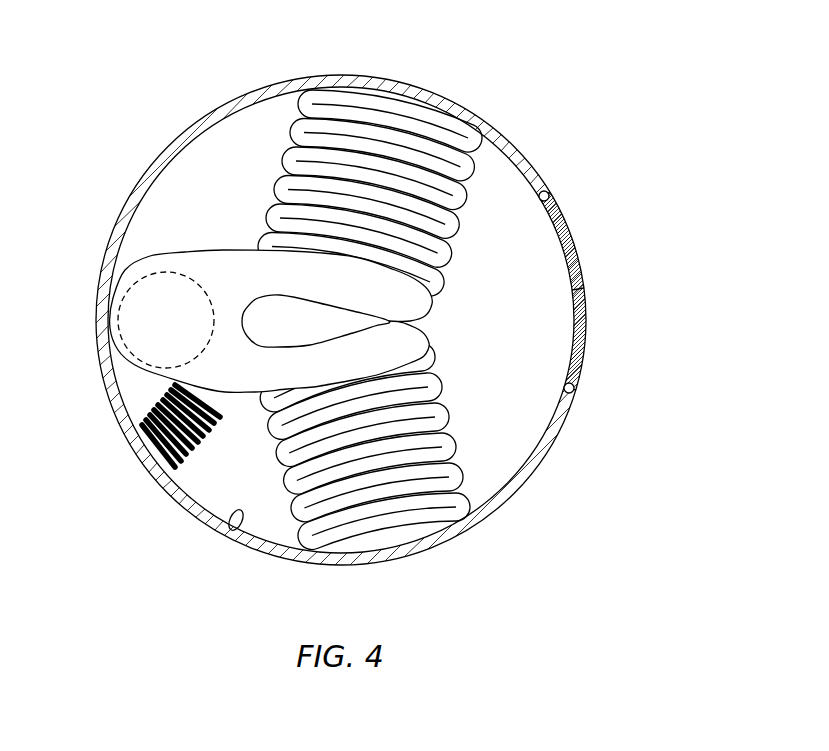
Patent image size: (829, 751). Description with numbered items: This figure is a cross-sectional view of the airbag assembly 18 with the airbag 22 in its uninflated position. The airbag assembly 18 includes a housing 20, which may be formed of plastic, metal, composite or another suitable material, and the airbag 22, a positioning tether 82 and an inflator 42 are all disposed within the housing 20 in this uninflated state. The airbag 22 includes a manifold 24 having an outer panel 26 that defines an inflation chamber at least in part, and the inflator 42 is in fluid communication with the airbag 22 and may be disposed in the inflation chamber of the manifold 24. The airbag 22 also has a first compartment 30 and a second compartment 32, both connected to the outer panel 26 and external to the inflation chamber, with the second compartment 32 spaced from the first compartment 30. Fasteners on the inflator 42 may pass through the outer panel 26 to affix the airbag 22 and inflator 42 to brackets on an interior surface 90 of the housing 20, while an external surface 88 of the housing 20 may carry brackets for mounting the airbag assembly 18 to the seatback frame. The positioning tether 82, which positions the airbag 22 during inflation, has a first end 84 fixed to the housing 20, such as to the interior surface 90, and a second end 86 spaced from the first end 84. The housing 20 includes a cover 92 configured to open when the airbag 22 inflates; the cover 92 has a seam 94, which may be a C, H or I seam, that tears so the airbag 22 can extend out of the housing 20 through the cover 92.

The airbag assembly 18 is at (196, 56).
The housing 20 is at (144, 164).
The airbag 22 is at (464, 308).
The manifold 24 is at (224, 248).
The outer panel 26 is at (430, 337).
The first compartment 30 is at (275, 151).
The second compartment 32 is at (465, 439).
The inflator 42 is at (118, 382).
The positioning tether 82 is at (212, 435).
The first end 84 is at (135, 422).
The second end 86 is at (224, 391).
The external surface 88 is at (171, 487).
The interior surface 90 is at (238, 528).
The cover 92 is at (598, 258).
The seam 94 is at (583, 290).